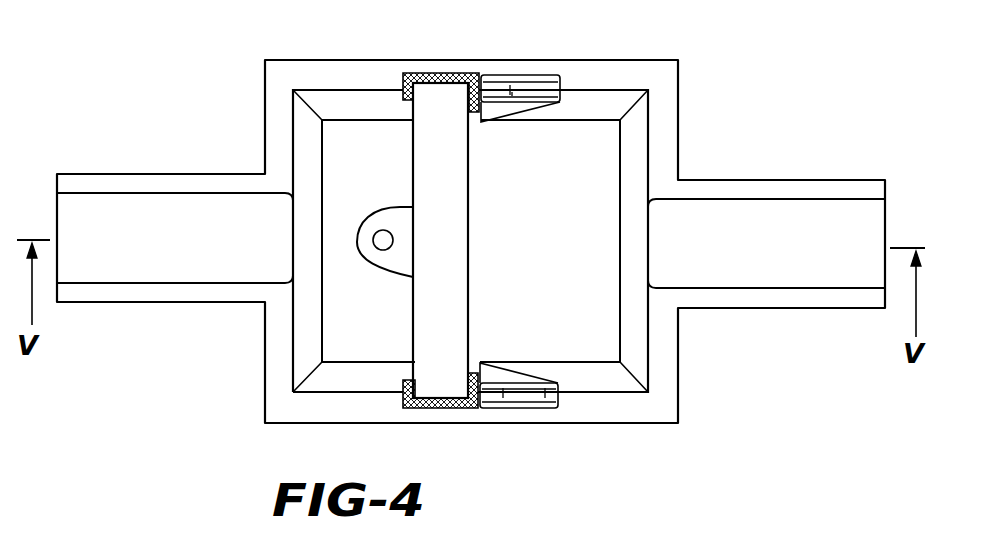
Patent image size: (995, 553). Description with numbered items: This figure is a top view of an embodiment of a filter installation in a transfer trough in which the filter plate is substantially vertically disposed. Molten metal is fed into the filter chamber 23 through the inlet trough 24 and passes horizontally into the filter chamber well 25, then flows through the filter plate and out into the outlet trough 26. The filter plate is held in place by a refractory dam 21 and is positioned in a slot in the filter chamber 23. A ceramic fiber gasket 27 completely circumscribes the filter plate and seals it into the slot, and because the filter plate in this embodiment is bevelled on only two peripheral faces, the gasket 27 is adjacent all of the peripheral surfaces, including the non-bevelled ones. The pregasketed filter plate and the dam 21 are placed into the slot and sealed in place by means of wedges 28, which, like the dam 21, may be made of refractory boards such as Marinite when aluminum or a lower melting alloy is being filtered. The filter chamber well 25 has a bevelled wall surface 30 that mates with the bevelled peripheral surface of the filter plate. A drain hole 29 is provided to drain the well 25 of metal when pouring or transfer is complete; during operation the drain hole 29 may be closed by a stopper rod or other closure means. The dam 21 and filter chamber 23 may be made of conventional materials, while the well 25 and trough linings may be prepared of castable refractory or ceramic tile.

The refractory dam 21 is at (456, 284).
The filter chamber 23 is at (566, 266).
The inlet trough 24 is at (786, 260).
The filter chamber well 25 is at (335, 315).
The outlet trough 26 is at (196, 259).
The ceramic fiber gasket 27 is at (432, 72).
The wedges 28 is at (526, 87).
The drain hole 29 is at (384, 231).
The bevelled wall surface 30 is at (344, 107).